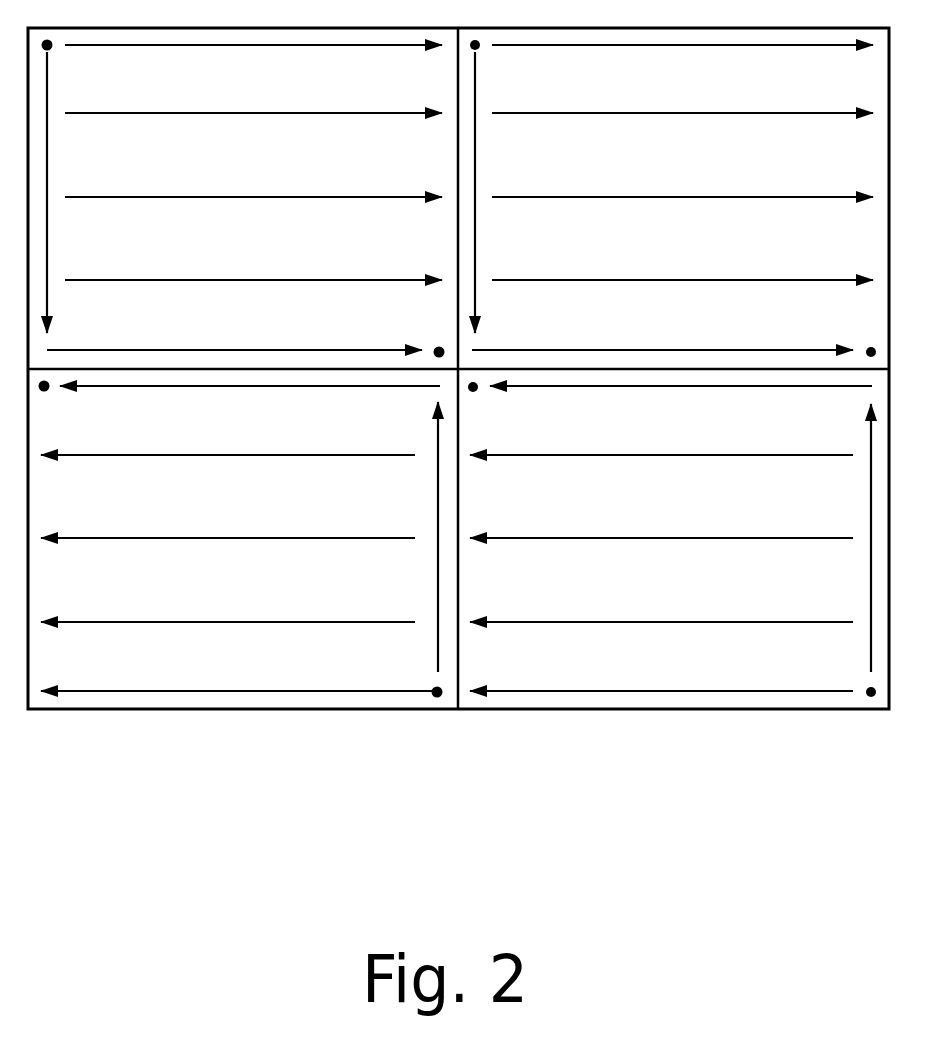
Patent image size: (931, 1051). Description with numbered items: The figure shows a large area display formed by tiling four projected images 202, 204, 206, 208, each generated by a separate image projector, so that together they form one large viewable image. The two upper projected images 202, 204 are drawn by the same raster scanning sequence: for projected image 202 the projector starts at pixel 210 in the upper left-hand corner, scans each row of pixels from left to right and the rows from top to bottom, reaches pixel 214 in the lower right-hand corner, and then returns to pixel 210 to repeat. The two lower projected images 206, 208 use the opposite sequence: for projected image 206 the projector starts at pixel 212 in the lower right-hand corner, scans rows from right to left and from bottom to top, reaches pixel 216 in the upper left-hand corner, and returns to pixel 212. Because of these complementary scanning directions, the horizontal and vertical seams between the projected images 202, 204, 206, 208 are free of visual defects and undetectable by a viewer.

The projected image 202 is at (262, 174).
The projected image 204 is at (688, 174).
The projected image 206 is at (241, 517).
The projected image 208 is at (680, 517).
The pixel 210 is at (50, 49).
The pixel 212 is at (433, 688).
The pixel 214 is at (435, 348).
The pixel 216 is at (47, 390).